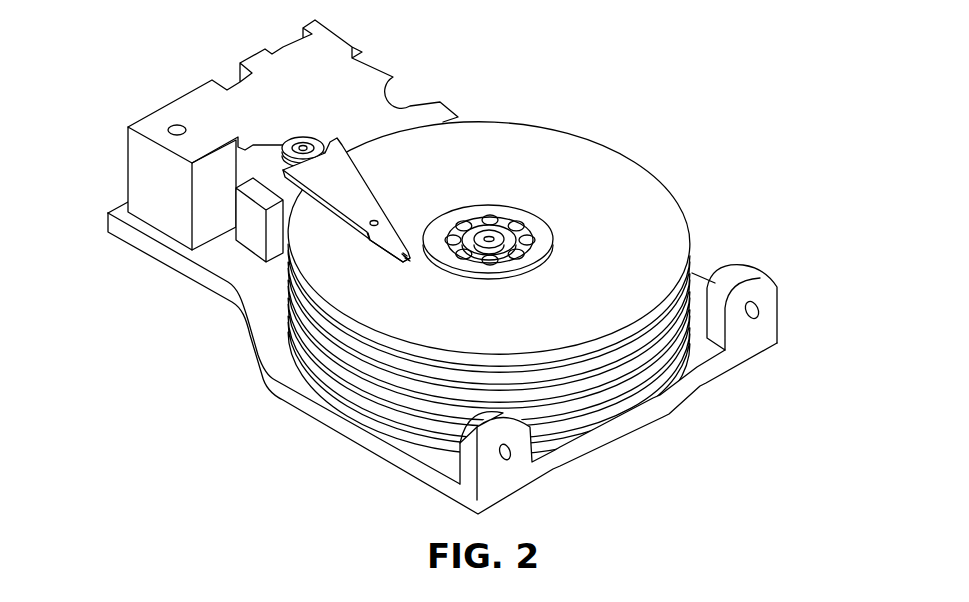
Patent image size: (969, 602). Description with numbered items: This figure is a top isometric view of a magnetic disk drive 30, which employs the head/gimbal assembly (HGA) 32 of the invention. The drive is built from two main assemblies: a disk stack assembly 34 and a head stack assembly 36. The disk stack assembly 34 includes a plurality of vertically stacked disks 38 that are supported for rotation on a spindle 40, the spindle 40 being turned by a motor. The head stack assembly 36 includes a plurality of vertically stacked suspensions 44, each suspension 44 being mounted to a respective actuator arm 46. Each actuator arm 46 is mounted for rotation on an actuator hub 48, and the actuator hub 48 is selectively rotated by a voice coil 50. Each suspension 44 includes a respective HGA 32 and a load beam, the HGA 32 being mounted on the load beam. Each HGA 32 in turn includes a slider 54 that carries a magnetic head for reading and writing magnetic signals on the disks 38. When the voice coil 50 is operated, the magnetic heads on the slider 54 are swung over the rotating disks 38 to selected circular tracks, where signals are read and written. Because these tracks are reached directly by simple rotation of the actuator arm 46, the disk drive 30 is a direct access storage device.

The magnetic disk drive 30 is at (708, 172).
The head/gimbal assembly (HGA) 32 is at (402, 255).
The disk stack assembly 34 is at (603, 145).
The head stack assembly 36 is at (275, 180).
The disks 38 is at (637, 372).
The spindle 40 is at (489, 239).
The suspensions 44 is at (402, 235).
The actuator arm 46 is at (360, 190).
The actuator hub 48 is at (303, 148).
The voice coil 50 is at (263, 58).
The slider 54 is at (410, 260).